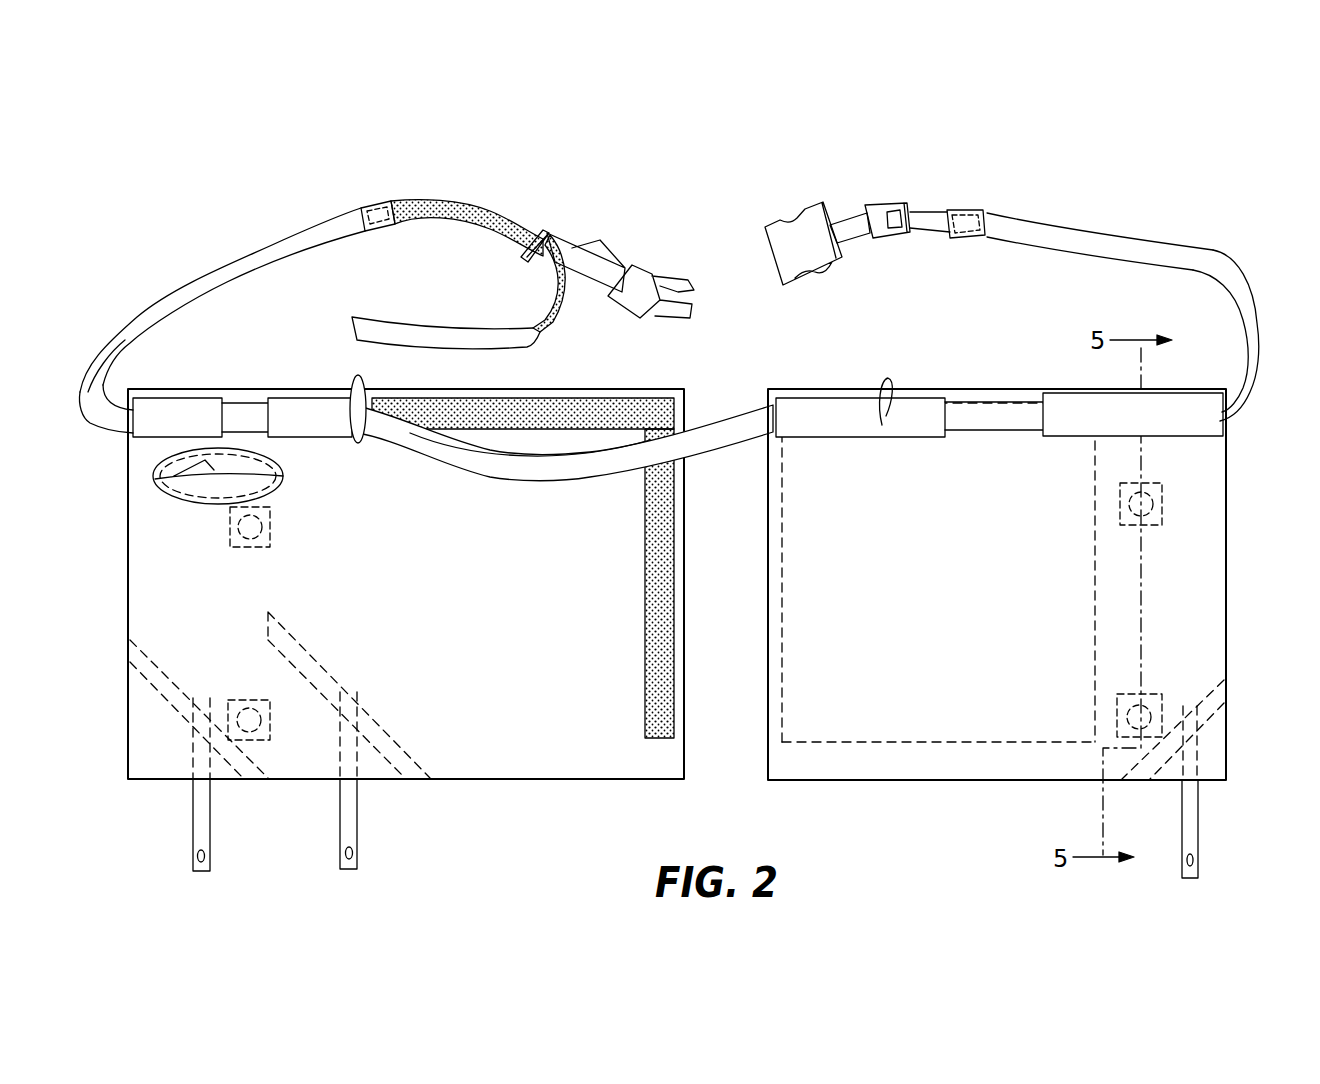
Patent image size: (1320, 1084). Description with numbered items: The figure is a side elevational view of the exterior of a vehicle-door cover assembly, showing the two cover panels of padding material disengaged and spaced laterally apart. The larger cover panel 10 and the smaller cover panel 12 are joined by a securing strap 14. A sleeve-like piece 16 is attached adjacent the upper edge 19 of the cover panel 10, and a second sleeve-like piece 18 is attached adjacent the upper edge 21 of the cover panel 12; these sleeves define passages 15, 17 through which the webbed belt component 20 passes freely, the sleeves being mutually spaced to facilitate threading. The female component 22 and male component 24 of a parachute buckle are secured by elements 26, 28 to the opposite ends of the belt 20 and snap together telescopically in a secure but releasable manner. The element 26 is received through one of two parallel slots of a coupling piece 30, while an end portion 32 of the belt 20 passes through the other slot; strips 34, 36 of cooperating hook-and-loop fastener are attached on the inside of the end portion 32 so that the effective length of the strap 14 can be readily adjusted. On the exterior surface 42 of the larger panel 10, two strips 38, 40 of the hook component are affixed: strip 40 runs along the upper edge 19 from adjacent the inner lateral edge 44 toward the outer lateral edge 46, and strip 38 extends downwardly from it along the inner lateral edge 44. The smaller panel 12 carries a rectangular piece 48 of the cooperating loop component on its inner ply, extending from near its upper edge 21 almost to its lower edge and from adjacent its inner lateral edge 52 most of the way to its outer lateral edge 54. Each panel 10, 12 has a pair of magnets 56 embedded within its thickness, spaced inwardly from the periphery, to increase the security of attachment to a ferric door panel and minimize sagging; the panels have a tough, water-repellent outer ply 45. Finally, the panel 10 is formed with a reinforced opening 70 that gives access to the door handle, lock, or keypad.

The cover panel 10 is at (504, 603).
The cover panel 12 is at (952, 640).
The securing strap 14 is at (1138, 242).
The passage 15 is at (130, 392).
The sleeve-like piece 16 is at (300, 404).
The passage 17 is at (776, 407).
The sleeve-like piece 18 is at (1075, 417).
The upper edge 19 is at (350, 443).
The belt component 20 is at (1254, 328).
The upper edge 21 is at (882, 425).
The female buckle component 22 is at (840, 264).
The male buckle component 24 is at (660, 275).
The securing element 26 is at (606, 250).
The securing element 28 is at (850, 217).
The coupling piece 30 is at (541, 232).
The end portion 32 is at (423, 333).
The hook-and-loop fastener strip 34 is at (430, 202).
The hook-and-loop fastener strip 36 is at (548, 324).
The hook-and-loop fastener strip 38 is at (646, 665).
The hook-and-loop fastener strip 40 is at (643, 408).
The exterior surface 42 is at (481, 767).
The inner lateral edge 44 is at (688, 740).
The outer ply 45 is at (1222, 518).
The outer lateral edge 46 is at (132, 598).
The rectangular Velcro piece 48 is at (873, 745).
The inner lateral edge 52 is at (786, 612).
The outer lateral edge 54 is at (1228, 589).
The magnet 56 is at (272, 522).
The reinforced opening 70 is at (215, 468).